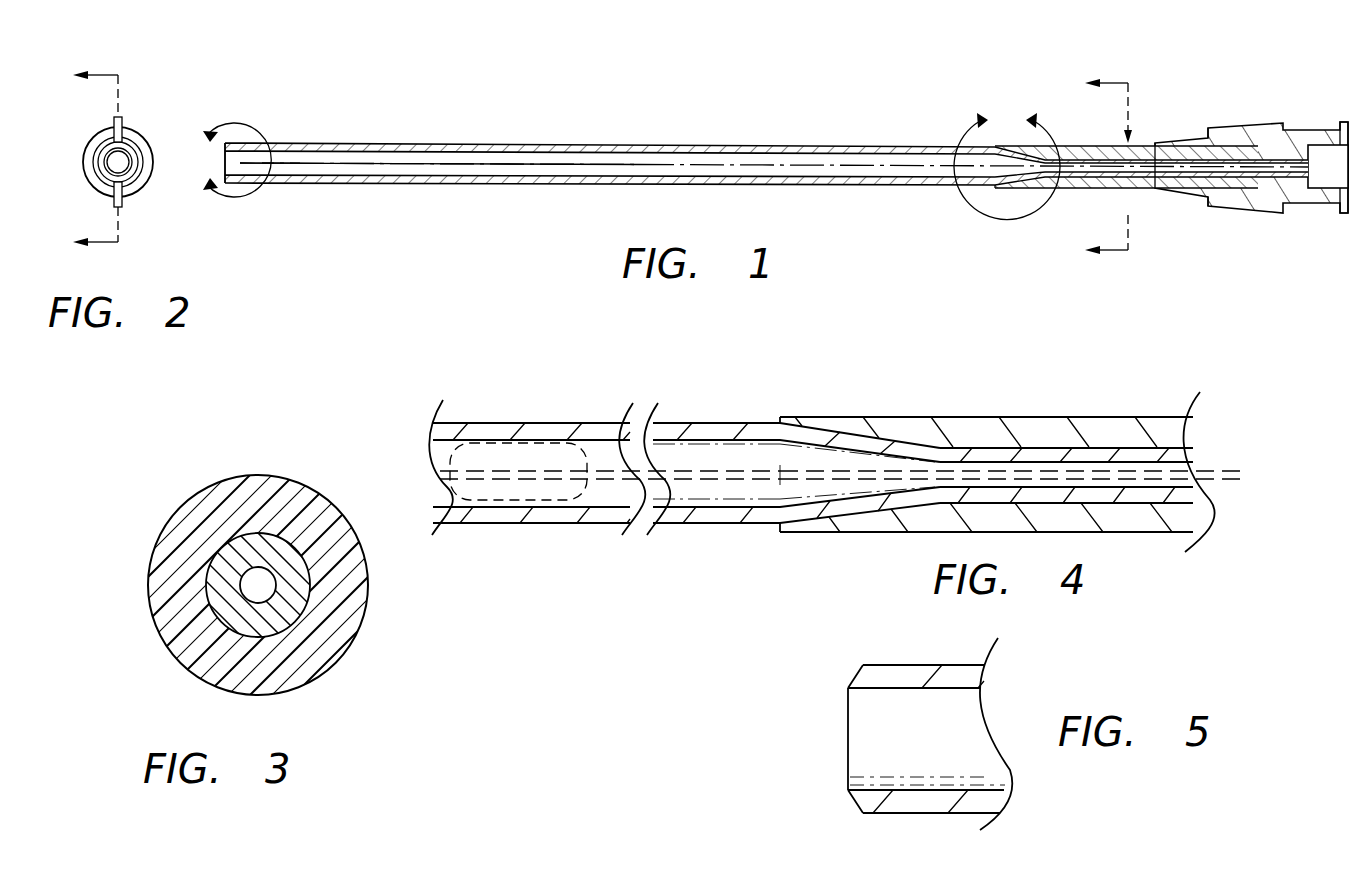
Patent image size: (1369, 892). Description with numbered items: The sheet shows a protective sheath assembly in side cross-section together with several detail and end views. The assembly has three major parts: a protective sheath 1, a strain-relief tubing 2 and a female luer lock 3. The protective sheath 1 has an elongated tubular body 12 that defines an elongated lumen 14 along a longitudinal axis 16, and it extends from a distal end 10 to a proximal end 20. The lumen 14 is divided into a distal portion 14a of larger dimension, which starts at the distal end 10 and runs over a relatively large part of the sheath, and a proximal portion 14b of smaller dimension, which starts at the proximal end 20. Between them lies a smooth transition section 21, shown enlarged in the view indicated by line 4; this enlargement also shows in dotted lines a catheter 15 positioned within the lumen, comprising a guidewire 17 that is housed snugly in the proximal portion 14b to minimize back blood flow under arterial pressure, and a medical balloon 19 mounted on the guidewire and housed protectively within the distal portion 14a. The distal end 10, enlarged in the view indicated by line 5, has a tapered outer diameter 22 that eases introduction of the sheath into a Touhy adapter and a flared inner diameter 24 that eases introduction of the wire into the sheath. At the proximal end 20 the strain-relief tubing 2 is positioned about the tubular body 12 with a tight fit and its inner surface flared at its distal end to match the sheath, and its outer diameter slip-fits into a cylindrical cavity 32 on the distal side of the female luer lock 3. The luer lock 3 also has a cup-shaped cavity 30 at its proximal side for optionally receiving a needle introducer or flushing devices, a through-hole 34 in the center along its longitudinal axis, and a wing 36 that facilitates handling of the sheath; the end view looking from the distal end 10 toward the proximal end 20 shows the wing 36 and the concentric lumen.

In FIG. 2, the protective sheath 1 is at (95, 146).
In FIG. 1, the protective sheath 1 is at (812, 138).
In FIG. 1, the strain-relief tubing 2 is at (1136, 140).
In FIG. 3, the strain-relief tubing 2 is at (262, 490).
In FIG. 1, the female luer lock 3 is at (1297, 122).
In FIG. 1, the line 4- 4 is at (1004, 156).
In FIG. 1, the line 5- 5 is at (231, 157).
In FIG. 2, the distal end 10 is at (125, 175).
In FIG. 1, the distal end 10 is at (250, 96).
In FIG. 1, the elongated tubular body 12 is at (575, 147).
In FIG. 3, the elongated tubular body 12 is at (292, 580).
In FIG. 1, the elongated lumen 14 is at (782, 168).
In FIG. 3, the elongated lumen 14 is at (262, 592).
In FIG. 1, the distal portion of the lumen 14a is at (452, 152).
In FIG. 4, the distal portion of the lumen 14a is at (598, 487).
In FIG. 1, the proximal portion of the lumen 14b is at (1158, 172).
In FIG. 4, the proximal portion of the lumen 14b is at (978, 465).
In FIG. 4, the catheter 15 is at (704, 450).
In FIG. 1, the longitudinal axis 16 is at (287, 158).
In FIG. 4, the guidewire 17 is at (1238, 472).
In FIG. 4, the medical balloon 19 is at (545, 455).
In FIG. 1, the proximal end 20 is at (1286, 225).
In FIG. 4, the transition section 21 is at (865, 470).
In FIG. 5, the tapered outer diameter 22 is at (848, 795).
In FIG. 5, the flared inner diameter 24 is at (848, 686).
In FIG. 1, the cup-shaped cavity 30 is at (1341, 160).
In FIG. 1, the cylindrical cavity 32 is at (1230, 190).
In FIG. 1, the through-hole 34 is at (1343, 215).
In FIG. 2, the wing 36 is at (126, 122).
In FIG. 1, the wing 36 is at (1259, 123).